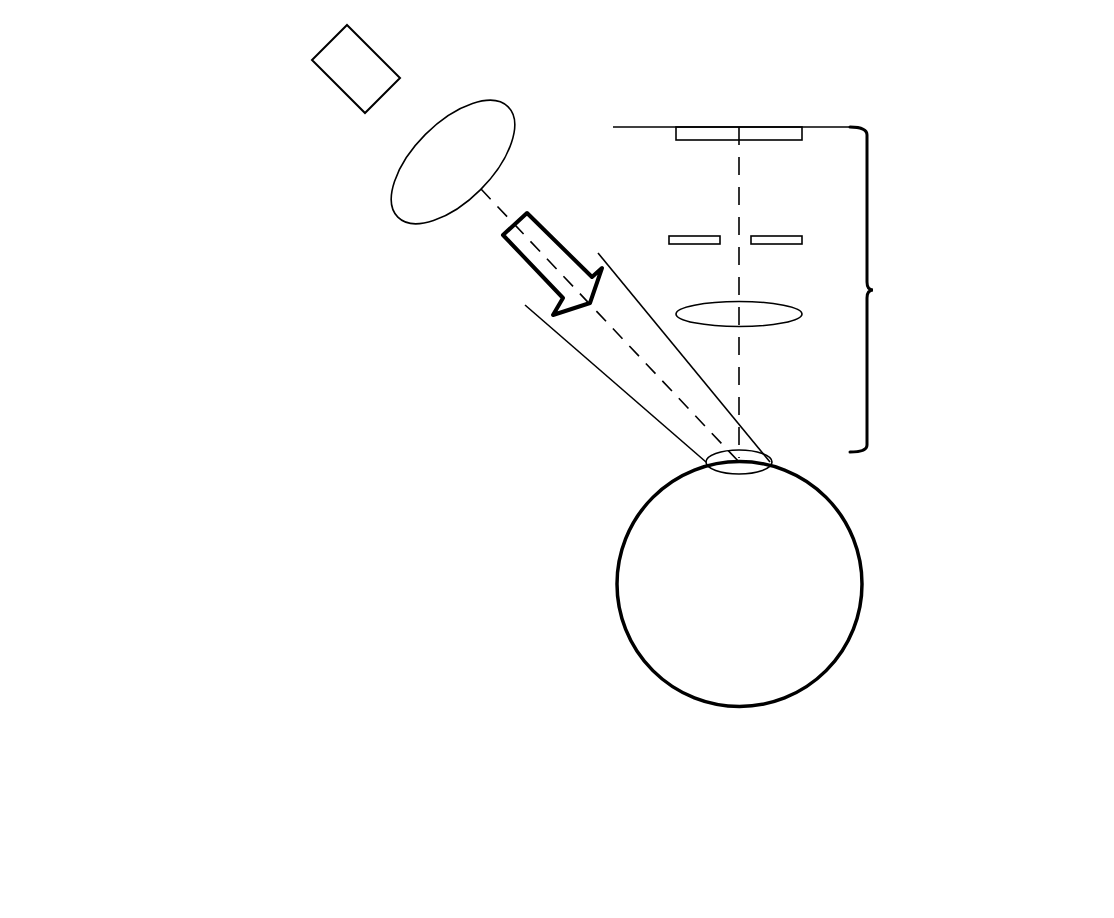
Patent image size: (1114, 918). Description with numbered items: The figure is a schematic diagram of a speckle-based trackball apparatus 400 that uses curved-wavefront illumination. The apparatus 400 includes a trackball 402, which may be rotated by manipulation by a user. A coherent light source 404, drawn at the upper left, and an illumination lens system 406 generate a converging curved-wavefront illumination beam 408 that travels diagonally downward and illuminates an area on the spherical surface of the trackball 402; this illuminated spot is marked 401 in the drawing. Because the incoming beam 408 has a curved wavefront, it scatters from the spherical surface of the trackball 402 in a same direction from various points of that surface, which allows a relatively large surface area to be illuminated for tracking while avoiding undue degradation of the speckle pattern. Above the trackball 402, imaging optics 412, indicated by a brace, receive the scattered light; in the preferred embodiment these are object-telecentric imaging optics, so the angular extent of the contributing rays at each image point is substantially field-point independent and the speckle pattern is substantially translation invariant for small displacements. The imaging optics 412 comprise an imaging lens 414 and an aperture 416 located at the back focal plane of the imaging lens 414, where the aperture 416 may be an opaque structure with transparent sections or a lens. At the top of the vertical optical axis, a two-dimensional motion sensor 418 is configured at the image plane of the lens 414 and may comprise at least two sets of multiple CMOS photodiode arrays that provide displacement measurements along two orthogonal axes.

The speckle-based trackball apparatus 400 is at (686, 810).
The illuminated spot on trackball 401 is at (739, 487).
The trackball 402 is at (739, 584).
The coherent light source 404 is at (257, 94).
The illumination lens system 406 is at (374, 194).
The converging curved-wavefront illumination beam 408 is at (592, 325).
The imaging optics 412 is at (967, 289).
The imaging lens 414 is at (745, 344).
The aperture 416 is at (747, 292).
The two-dimensional motion sensor 418 is at (736, 103).